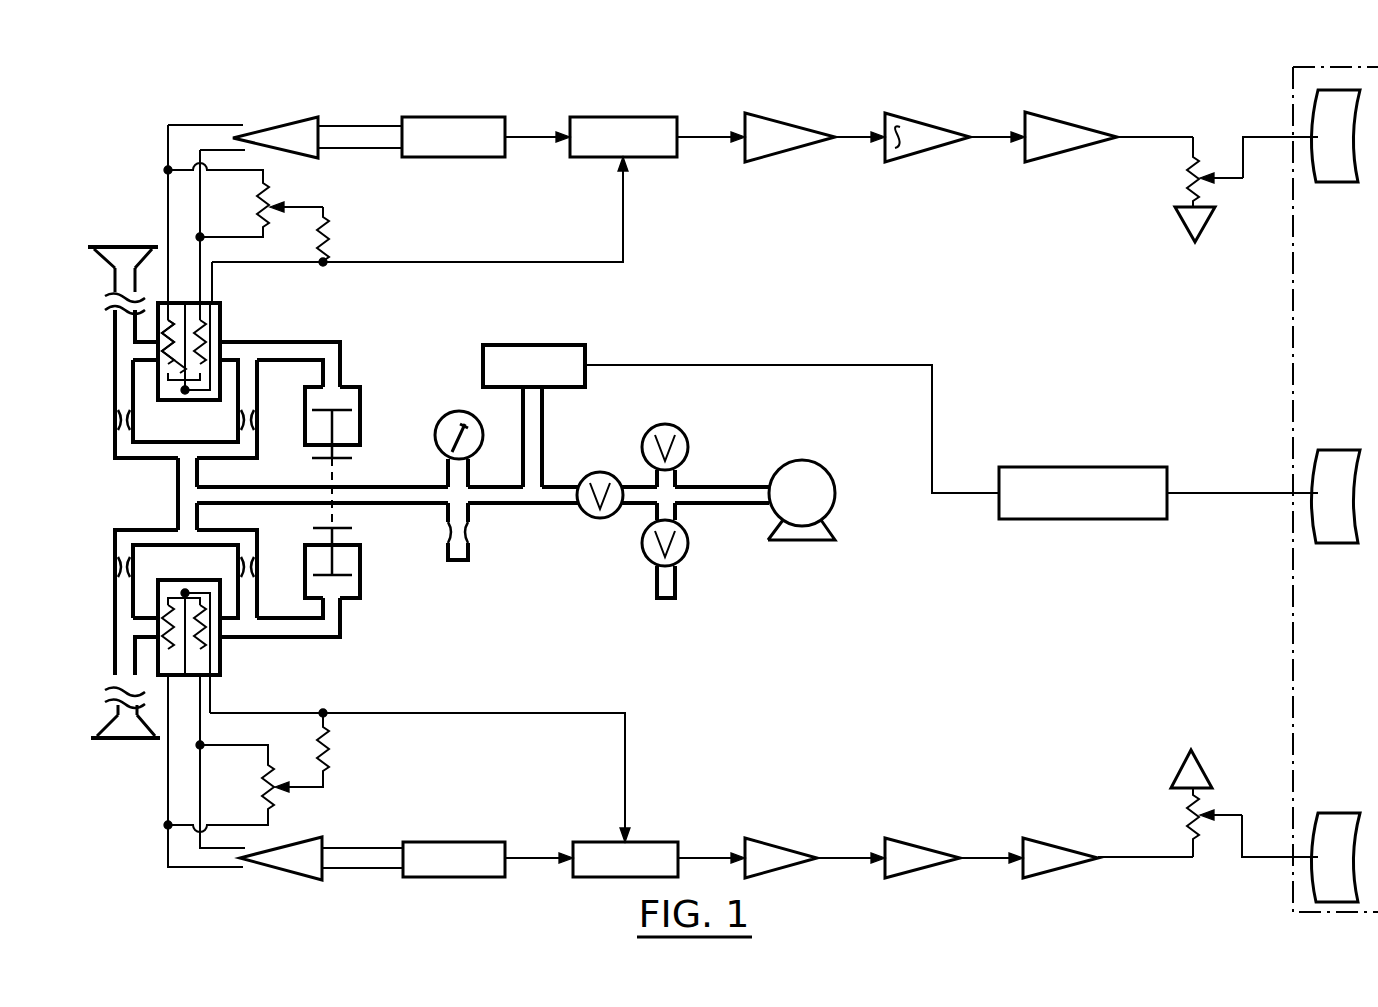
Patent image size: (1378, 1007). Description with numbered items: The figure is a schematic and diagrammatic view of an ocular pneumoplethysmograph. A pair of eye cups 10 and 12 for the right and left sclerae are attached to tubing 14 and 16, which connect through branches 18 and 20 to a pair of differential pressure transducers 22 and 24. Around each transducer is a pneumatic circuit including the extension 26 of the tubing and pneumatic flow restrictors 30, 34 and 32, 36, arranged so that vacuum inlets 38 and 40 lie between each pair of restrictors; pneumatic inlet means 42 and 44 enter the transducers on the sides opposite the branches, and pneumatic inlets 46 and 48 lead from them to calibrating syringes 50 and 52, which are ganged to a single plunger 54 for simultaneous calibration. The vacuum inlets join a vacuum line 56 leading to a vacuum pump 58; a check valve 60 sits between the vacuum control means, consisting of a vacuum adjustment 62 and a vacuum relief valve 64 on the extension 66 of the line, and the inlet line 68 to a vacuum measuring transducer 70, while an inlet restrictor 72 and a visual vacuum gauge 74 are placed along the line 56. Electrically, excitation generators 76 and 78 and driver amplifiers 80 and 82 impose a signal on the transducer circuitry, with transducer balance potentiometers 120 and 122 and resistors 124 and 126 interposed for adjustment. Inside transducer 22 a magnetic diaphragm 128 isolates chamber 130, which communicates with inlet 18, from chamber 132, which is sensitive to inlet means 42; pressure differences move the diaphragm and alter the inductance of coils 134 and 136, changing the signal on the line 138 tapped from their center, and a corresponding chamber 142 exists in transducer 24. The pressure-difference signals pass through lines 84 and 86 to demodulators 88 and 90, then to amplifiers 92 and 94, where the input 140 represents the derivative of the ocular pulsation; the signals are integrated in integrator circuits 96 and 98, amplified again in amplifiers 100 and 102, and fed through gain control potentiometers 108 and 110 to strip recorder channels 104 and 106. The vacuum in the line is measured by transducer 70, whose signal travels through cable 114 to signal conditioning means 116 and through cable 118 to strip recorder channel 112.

The eye cup 10 is at (128, 246).
The eye cup 12 is at (133, 742).
The tubing 14 is at (118, 290).
The tubing 16 is at (120, 700).
The branch 18 is at (141, 350).
The branch 20 is at (150, 615).
The differential pressure transducer 22 is at (223, 312).
The differential pressure transducer 24 is at (222, 662).
The extension of tubing 26 is at (115, 380).
The pneumatic flow restrictor 30 is at (117, 421).
The pneumatic flow restrictor 32 is at (117, 565).
The pneumatic flow restrictor 34 is at (256, 424).
The pneumatic flow restrictor 36 is at (256, 565).
The vacuum inlet 38 is at (176, 480).
The vacuum inlet 40 is at (176, 517).
The pneumatic inlet means 42 is at (228, 340).
The pneumatic inlet means 44 is at (235, 640).
The pneumatic inlet 46 is at (322, 343).
The pneumatic inlet 48 is at (320, 640).
The calibrating syringe 50 is at (362, 425).
The calibrating syringe 52 is at (362, 584).
The plunger 54 is at (338, 471).
The vacuum line 56 is at (236, 487).
The vacuum pump 58 is at (815, 462).
The check valve 60 is at (600, 472).
The vacuum adjustment 62 is at (688, 445).
The vacuum relief valve 64 is at (690, 550).
The extension of vacuum line 66 is at (736, 485).
The inlet line 68 is at (545, 440).
The vacuum measuring transducer 70 is at (510, 345).
The inlet restrictor 72 is at (477, 531).
The visual vacuum gauge 74 is at (446, 414).
The excitation generator 76 is at (486, 137).
The excitation generator 78 is at (488, 859).
The driver amplifier 80 is at (285, 137).
The driver amplifier 82 is at (283, 777).
The line 84 is at (414, 262).
The line 86 is at (430, 712).
The demodulator 88 is at (623, 137).
The demodulator 90 is at (659, 859).
The amplifier 92 is at (815, 137).
The amplifier 94 is at (815, 858).
The integrator circuit 96 is at (955, 137).
The integrator circuit 98 is at (954, 858).
The amplifier 100 is at (1109, 137).
The amplifier 102 is at (1108, 858).
The strip recorder channel 104 is at (1335, 136).
The strip recorder channel 106 is at (1335, 857).
The gain control potentiometer 108 is at (1205, 181).
The gain control potentiometer 110 is at (1208, 806).
The strip recorder channel 112 is at (1335, 496).
The cable 114 is at (744, 364).
The signal conditioning means 116 is at (1083, 493).
The cable 118 is at (1246, 490).
The transducer balance potentiometer 120 is at (274, 200).
The transducer balance potentiometer 122 is at (280, 798).
The resistor 124 is at (328, 228).
The resistor 126 is at (332, 749).
The magnetic diaphragm 128 is at (182, 392).
The chamber 130 is at (166, 386).
The chamber 132 is at (203, 393).
The coil 134 is at (170, 355).
The coil 136 is at (205, 348).
The electrical line 138 is at (278, 260).
The input 140 is at (696, 133).
The transducer chamber 142 is at (220, 675).